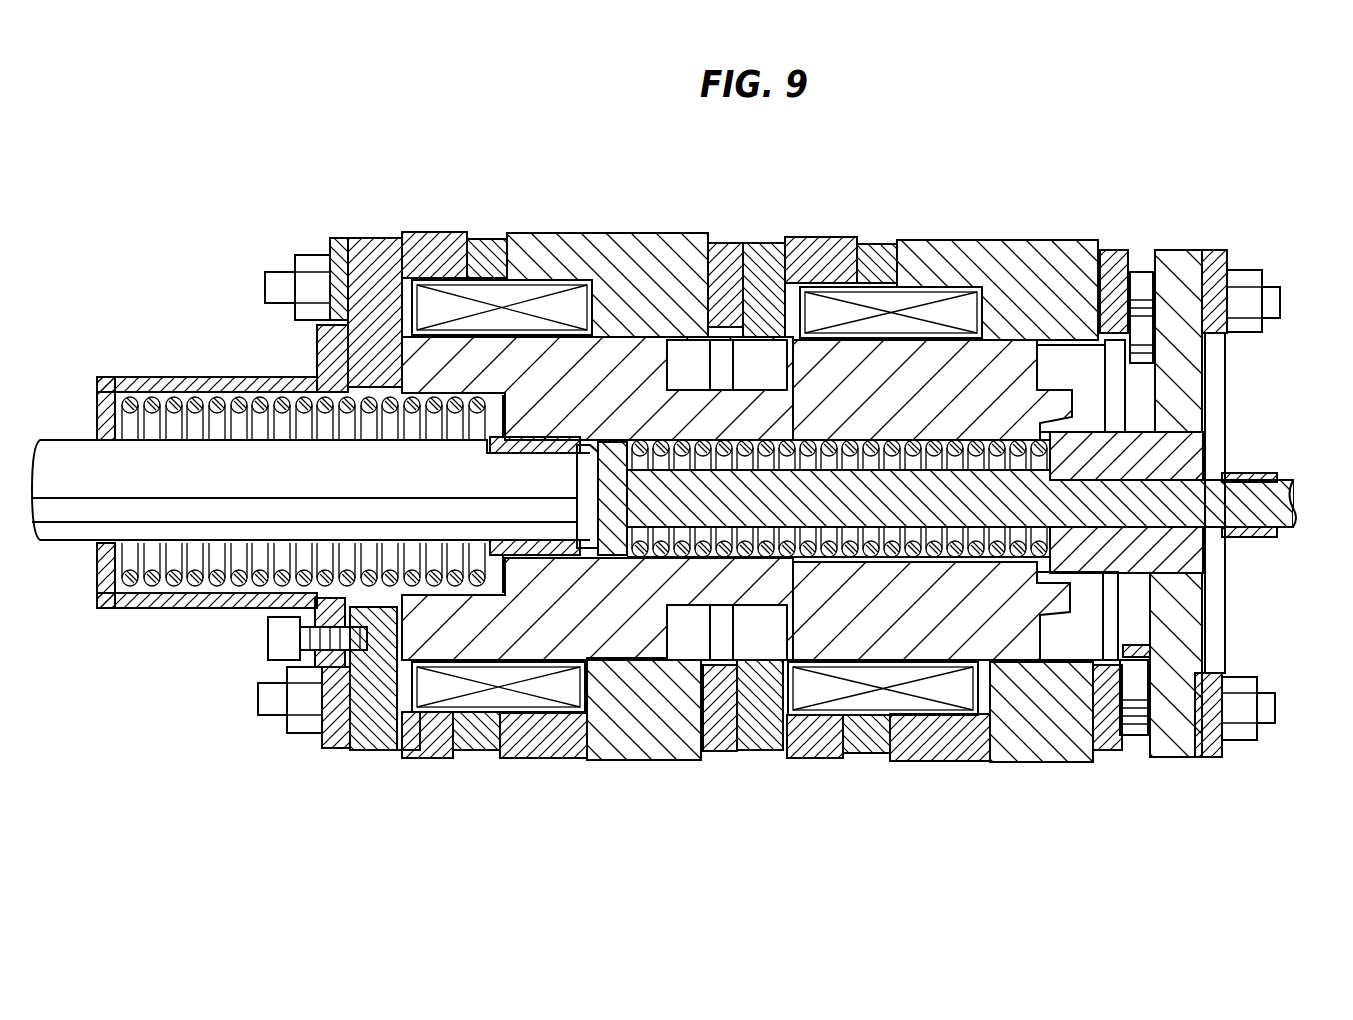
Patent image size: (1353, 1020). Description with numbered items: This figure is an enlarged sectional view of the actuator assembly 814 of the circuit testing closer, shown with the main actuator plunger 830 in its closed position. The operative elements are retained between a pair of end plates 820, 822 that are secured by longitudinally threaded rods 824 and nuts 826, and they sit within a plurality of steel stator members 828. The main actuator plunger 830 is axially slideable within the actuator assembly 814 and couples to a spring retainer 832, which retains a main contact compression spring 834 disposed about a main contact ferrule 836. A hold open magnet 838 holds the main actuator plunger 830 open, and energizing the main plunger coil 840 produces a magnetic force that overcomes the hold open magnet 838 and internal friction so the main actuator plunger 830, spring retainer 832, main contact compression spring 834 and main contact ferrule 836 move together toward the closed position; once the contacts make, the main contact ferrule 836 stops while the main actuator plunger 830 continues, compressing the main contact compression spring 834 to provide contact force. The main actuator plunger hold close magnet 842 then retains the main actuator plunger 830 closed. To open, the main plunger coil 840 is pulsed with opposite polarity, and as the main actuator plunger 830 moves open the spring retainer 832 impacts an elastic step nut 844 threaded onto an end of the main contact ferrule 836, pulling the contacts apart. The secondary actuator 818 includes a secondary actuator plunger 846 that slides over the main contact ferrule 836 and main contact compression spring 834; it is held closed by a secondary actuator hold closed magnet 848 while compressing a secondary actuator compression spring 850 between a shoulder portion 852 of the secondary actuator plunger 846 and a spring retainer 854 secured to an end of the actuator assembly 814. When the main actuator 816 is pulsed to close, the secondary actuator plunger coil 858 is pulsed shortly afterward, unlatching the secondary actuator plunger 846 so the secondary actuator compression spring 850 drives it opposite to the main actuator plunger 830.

The actuator assembly 814 is at (1128, 198).
The main actuator 816 is at (1014, 541).
The secondary actuator 818 is at (725, 512).
The end plate 820 is at (342, 238).
The end plate 822 is at (1213, 262).
The longitudinally threaded rod 824 is at (265, 280).
The nut 826 is at (310, 255).
The steel stator member 828 is at (612, 250).
The main actuator plunger 830 is at (1018, 377).
The spring retainer 832 is at (1188, 558).
The main contact compression spring 834 is at (981, 560).
The main contact ferrule 836 is at (922, 560).
The hold open magnet 838 is at (1135, 618).
The main plunger coil 840 is at (822, 693).
The main actuator plunger hold close magnet 842 is at (762, 722).
The elastic step nut 844 is at (1255, 470).
The secondary actuator plunger 846 is at (597, 601).
The secondary actuator hold closed magnet 848 is at (722, 737).
The secondary actuator compression spring 850 is at (198, 398).
The shoulder portion 852 is at (482, 585).
The spring retainer 854 is at (196, 608).
The secondary actuator plunger coil 858 is at (408, 757).